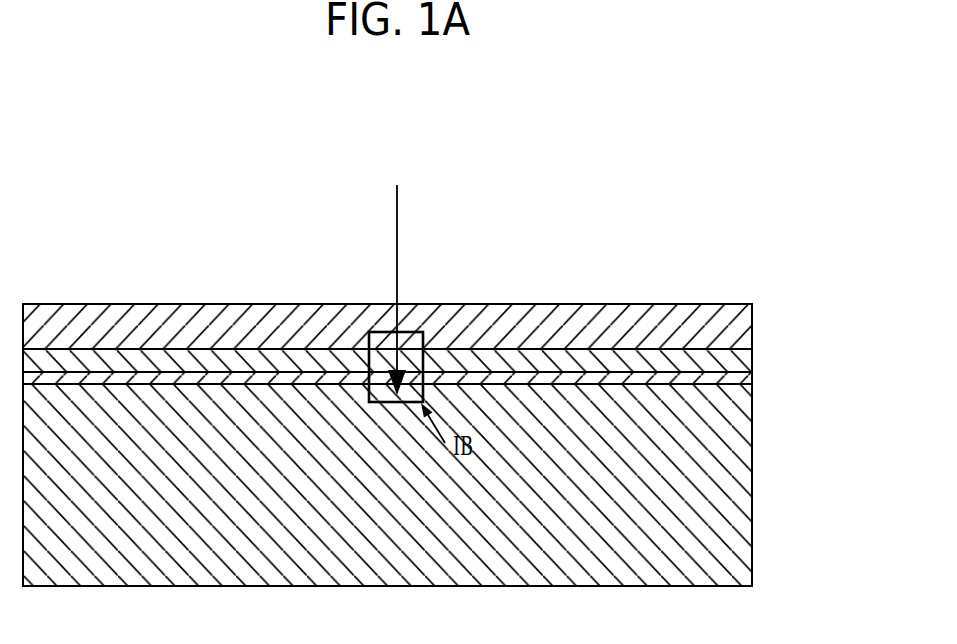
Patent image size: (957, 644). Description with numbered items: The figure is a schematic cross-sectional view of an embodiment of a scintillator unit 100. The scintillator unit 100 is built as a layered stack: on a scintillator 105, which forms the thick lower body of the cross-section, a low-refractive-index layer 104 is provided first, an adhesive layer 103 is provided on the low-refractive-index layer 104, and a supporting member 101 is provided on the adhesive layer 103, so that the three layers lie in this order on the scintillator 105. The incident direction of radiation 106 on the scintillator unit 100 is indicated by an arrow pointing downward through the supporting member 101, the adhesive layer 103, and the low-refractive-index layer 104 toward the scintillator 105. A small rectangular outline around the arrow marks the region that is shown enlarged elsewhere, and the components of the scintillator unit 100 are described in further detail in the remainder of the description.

The scintillator unit 100 is at (107, 229).
The supporting member 101 is at (733, 325).
The adhesive layer 103 is at (733, 362).
The low-refractive-index layer 104 is at (733, 378).
The scintillator 105 is at (732, 493).
The radiation 106 is at (395, 274).